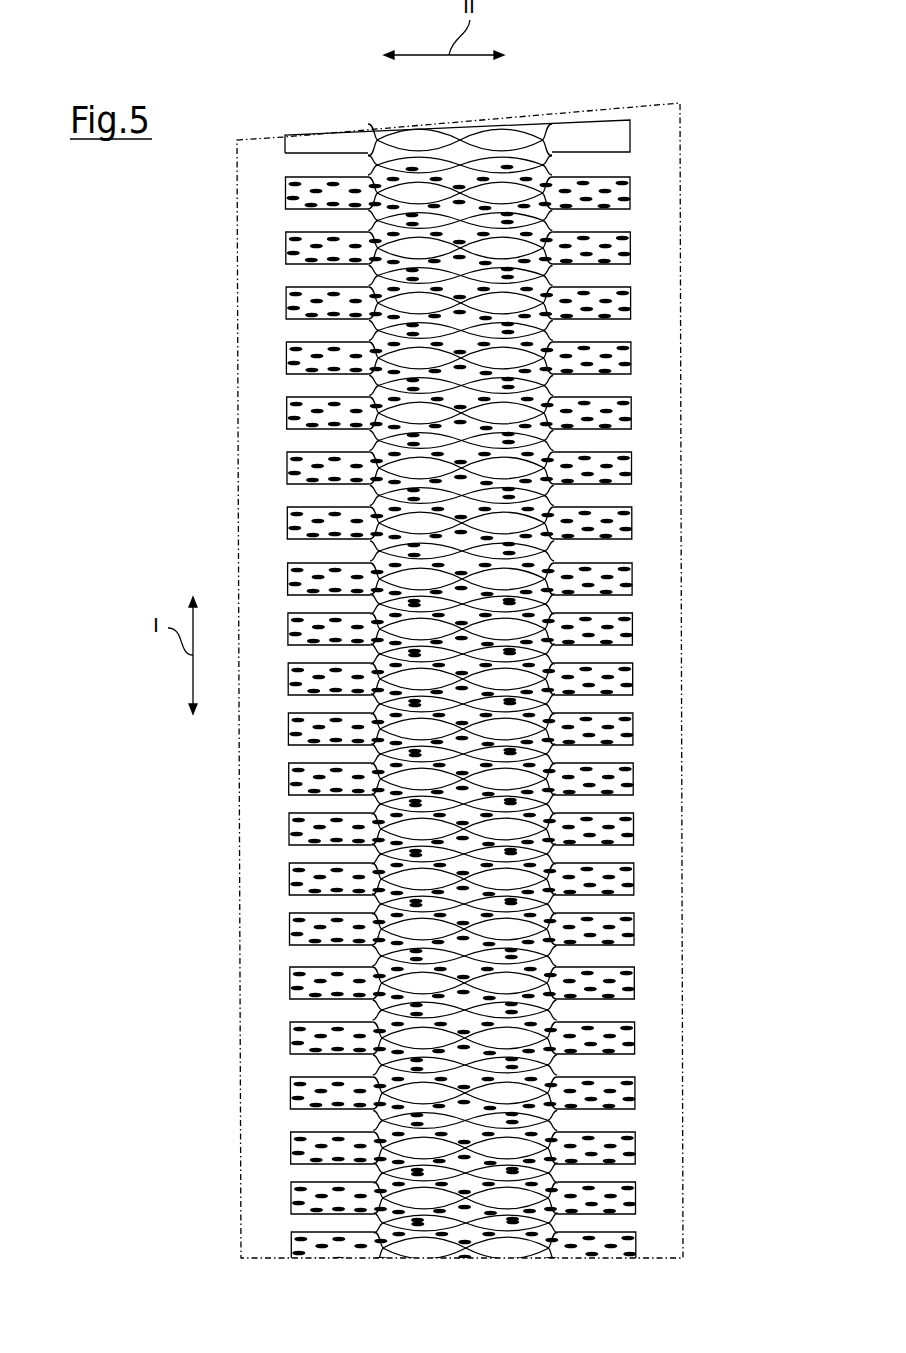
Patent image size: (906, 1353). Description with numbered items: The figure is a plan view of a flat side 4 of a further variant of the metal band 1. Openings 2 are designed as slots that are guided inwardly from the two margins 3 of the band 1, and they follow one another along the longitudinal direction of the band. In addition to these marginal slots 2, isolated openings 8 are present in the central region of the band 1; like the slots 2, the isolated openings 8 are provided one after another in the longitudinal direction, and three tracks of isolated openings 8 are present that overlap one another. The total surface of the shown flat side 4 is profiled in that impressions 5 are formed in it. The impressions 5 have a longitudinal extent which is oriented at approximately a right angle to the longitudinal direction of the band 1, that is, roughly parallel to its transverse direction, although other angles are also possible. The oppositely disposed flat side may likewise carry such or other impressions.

The band 1 is at (602, 104).
The openings 2 is at (613, 330).
The margins 3 is at (632, 136).
The flat side 4 is at (346, 137).
The impressions 5 is at (607, 575).
The isolated openings 8 is at (468, 1222).